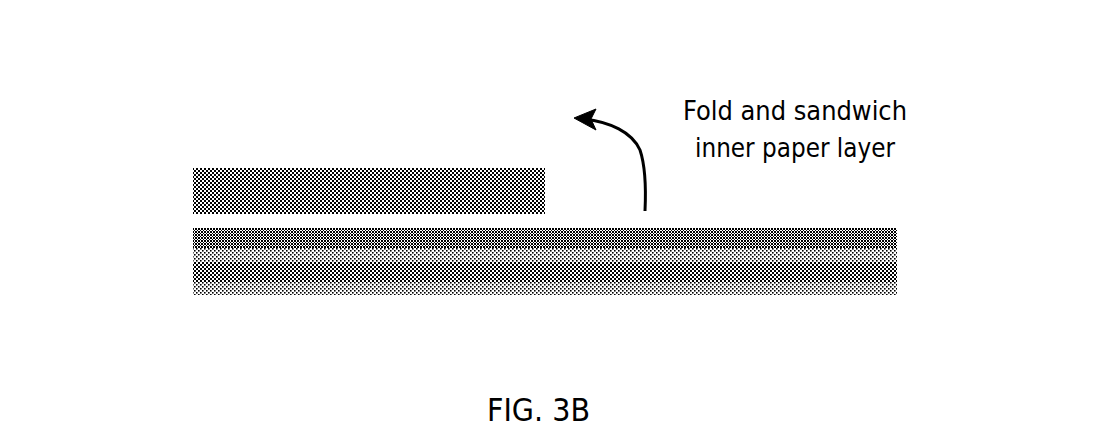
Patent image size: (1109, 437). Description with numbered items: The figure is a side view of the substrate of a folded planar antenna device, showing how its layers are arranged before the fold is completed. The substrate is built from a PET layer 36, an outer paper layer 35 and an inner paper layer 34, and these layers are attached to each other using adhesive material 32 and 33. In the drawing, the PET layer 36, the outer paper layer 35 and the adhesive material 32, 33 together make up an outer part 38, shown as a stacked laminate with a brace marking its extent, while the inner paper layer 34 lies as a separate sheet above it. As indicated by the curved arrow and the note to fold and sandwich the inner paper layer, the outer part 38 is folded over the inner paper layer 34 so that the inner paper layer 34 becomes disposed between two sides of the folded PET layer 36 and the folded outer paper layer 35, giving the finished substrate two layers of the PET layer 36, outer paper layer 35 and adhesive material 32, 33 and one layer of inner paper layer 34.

The adhesive material 32 is at (190, 272).
The adhesive material 33 is at (838, 230).
The inner paper layer 34 is at (252, 167).
The outer paper layer 35 is at (200, 258).
The PET layer 36 is at (412, 299).
The outer part 38 is at (526, 261).